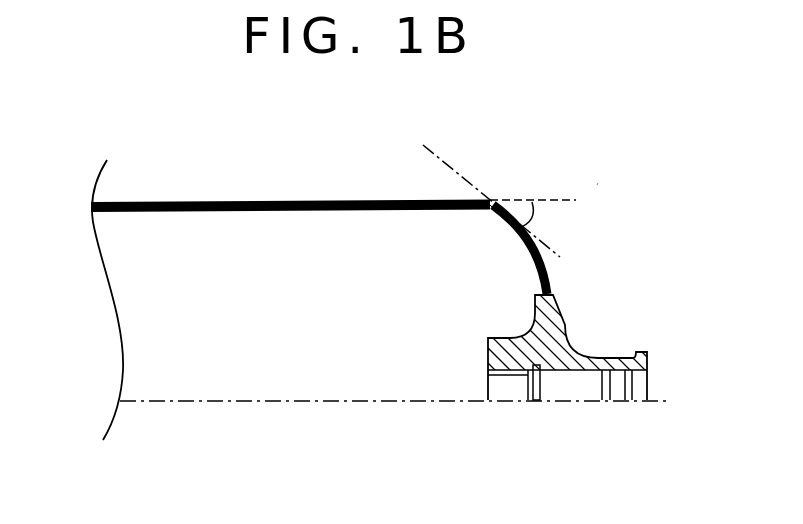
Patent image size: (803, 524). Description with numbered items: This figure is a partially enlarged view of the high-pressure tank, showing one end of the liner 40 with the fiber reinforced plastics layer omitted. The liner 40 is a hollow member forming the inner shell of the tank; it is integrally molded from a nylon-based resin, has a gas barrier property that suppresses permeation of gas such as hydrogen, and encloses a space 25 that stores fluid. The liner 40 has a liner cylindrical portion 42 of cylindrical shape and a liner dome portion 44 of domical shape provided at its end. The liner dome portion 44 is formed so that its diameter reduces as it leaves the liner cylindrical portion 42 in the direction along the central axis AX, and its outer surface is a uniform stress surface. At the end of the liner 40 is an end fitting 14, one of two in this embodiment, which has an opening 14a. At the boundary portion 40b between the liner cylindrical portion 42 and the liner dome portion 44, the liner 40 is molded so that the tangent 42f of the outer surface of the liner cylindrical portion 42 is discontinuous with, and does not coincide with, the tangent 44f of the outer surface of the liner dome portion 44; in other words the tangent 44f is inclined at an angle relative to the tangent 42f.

The end fitting 14 is at (562, 371).
The opening 14a is at (505, 371).
The space 25 is at (324, 331).
The liner 40 is at (598, 184).
The boundary portion 40b is at (489, 209).
The liner cylindrical portion 42 is at (385, 211).
The tangent of the outer surface of the liner cylindrical portion 42f is at (552, 200).
The liner dome portion 44 is at (511, 228).
The tangent of the outer surface of the liner dome portion 44f is at (456, 164).
The central axis AX is at (342, 400).